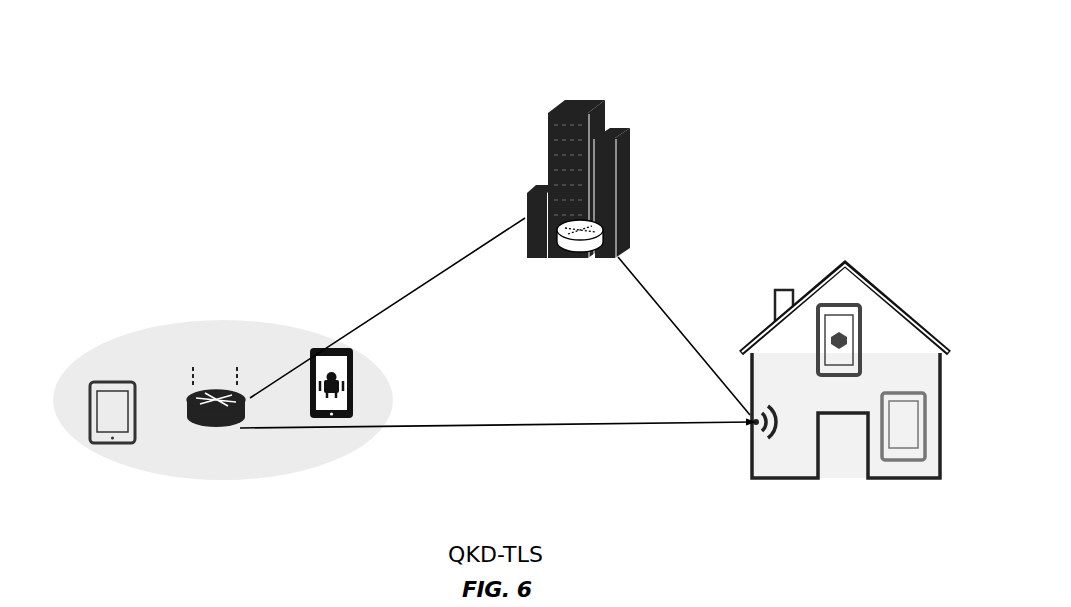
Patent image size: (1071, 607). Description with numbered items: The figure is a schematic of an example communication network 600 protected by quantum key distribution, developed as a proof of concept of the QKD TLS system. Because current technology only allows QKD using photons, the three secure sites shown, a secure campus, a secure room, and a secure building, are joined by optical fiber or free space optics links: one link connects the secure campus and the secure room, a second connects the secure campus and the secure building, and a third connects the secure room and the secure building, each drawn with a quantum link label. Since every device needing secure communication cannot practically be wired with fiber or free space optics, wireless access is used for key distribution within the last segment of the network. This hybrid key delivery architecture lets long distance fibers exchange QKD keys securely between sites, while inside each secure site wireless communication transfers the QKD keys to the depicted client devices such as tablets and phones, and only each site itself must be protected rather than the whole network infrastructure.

The communication network 600 is at (116, 36).